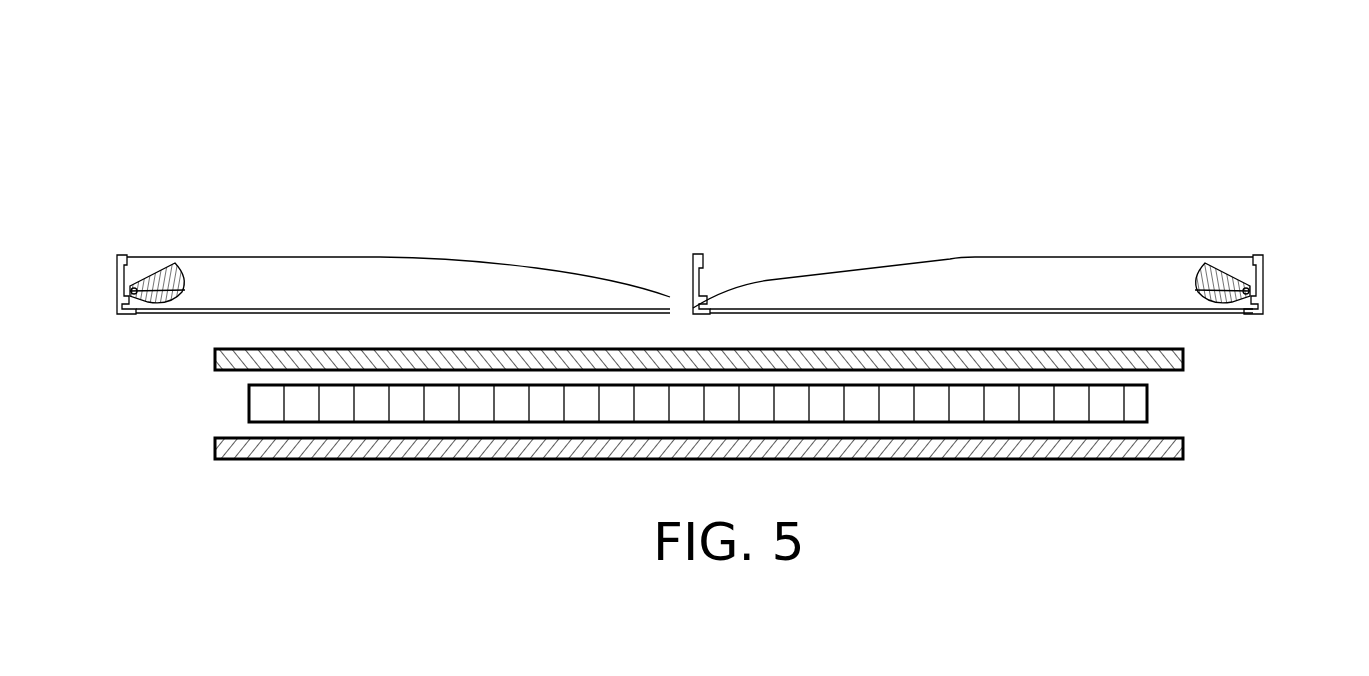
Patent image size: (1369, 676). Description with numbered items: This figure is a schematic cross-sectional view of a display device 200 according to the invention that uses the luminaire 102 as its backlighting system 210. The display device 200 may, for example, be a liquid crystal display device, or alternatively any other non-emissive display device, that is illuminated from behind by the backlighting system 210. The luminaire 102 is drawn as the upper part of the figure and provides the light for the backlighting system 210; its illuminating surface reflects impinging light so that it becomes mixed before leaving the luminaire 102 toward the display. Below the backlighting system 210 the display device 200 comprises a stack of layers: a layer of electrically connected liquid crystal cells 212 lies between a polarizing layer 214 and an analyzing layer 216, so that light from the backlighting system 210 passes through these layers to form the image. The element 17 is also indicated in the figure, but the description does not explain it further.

The display device 200 is at (1052, 99).
The luminaire 102 is at (115, 170).
The reflective sheet 17 is at (181, 342).
The backlighting system 210 is at (1280, 245).
The liquid crystal cells 212 is at (1148, 403).
The polarizing layer 214 is at (1184, 359).
The analyzing layer 216 is at (1184, 449).